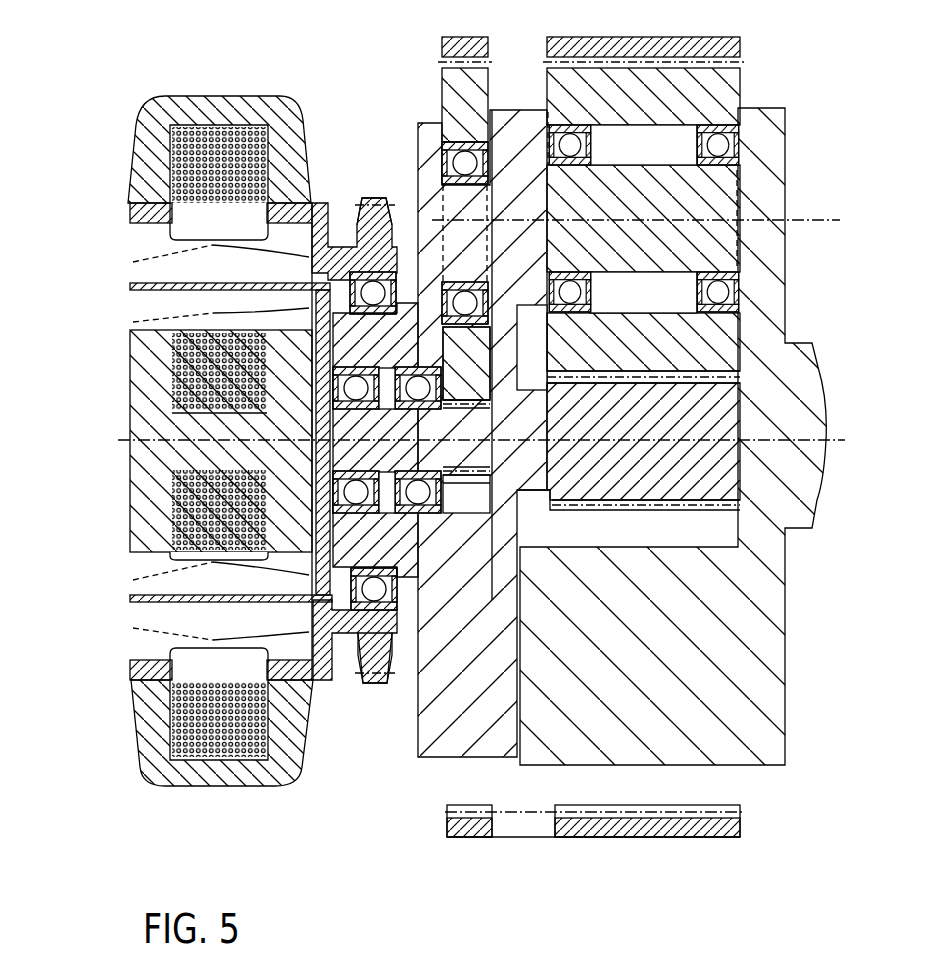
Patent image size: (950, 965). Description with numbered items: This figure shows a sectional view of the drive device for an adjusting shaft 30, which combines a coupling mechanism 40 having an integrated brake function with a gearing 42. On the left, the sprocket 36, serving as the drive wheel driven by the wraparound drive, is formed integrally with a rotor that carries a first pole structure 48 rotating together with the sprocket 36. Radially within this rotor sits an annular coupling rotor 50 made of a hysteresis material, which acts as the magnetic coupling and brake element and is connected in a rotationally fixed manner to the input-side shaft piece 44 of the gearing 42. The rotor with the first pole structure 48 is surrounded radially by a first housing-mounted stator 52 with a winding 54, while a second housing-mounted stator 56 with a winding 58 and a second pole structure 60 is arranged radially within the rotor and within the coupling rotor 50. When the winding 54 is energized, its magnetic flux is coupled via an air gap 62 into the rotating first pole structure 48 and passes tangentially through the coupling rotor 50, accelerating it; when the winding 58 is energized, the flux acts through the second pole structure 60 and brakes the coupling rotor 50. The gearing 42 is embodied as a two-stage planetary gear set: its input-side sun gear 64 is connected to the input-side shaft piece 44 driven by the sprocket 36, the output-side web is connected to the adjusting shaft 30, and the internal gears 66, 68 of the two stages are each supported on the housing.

The adjusting shaft 30 is at (750, 743).
The sprocket 36 is at (372, 684).
The coupling mechanism 40 is at (312, 798).
The gearing 42 is at (567, 480).
The input-side shaft piece 44 is at (393, 455).
The first pole structure 48 is at (303, 233).
The coupling rotor 50 is at (140, 598).
The first housing-mounted stator 52 is at (158, 109).
The winding 54 is at (183, 160).
The second housing-mounted stator 56 is at (160, 420).
The winding 58 is at (176, 376).
The second pole structure 60 is at (160, 322).
The air gap 62 is at (302, 707).
The input-side sun gear 64 is at (463, 420).
The internal gear 66 is at (442, 43).
The internal gear 68 is at (720, 44).